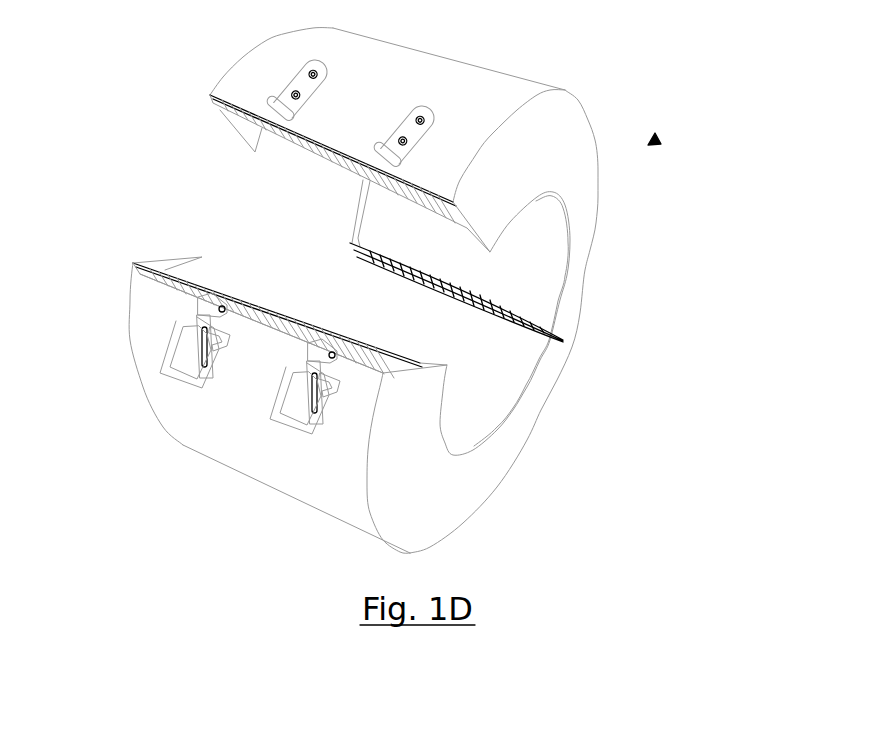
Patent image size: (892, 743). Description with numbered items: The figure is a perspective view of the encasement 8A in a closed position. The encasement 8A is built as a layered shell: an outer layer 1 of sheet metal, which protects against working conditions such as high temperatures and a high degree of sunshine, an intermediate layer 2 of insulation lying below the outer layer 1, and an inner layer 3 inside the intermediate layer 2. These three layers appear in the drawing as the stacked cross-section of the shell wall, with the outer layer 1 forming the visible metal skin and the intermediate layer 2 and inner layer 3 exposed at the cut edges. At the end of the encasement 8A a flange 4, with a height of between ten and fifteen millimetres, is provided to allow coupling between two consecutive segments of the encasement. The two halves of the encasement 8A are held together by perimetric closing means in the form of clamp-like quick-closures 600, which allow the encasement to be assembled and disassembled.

The outer layer 1 is at (475, 93).
The intermediate layer 2 is at (250, 128).
The inner layer 3 is at (252, 131).
The flange 4 is at (570, 140).
The encasement 8A is at (659, 138).
The clamp-like quick-closures 600 is at (193, 375).